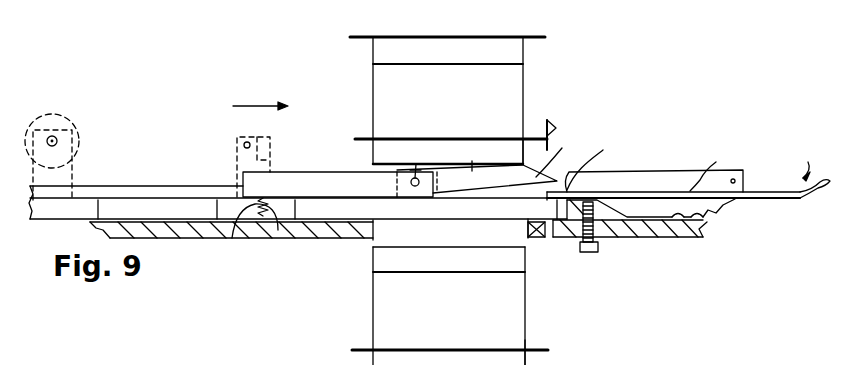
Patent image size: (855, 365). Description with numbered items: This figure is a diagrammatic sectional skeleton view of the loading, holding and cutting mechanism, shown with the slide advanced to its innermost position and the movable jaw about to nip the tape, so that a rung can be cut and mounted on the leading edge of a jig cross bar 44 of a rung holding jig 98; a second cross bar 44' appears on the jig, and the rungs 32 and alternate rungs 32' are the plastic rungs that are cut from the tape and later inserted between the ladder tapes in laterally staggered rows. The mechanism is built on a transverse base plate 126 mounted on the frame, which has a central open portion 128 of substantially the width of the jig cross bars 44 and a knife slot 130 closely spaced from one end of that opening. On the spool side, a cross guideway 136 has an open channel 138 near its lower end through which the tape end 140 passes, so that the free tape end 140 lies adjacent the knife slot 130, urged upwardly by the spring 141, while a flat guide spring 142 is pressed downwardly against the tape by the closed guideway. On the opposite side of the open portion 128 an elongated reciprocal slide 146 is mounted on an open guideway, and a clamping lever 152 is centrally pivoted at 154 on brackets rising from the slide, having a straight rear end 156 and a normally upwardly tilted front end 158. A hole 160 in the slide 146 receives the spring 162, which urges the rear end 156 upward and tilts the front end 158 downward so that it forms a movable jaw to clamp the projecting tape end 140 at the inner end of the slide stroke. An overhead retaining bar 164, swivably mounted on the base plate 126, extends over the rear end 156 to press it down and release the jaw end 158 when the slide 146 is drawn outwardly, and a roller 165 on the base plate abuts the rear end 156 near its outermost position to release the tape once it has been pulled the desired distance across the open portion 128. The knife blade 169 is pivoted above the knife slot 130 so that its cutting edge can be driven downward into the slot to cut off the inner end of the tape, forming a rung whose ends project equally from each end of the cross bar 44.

The ladder rung 32 is at (447, 27).
The alternate ladder rung 32' is at (450, 230).
The jig cross bar 44 is at (469, 160).
The jig cross bar 44' is at (536, 229).
The rung holding jig 98 is at (372, 90).
The transverse base plate 126 is at (172, 238).
The central open portion 128 is at (387, 227).
The knife slot 130 is at (528, 230).
The cross guideway 136 is at (666, 166).
The open channel 138 is at (716, 162).
The tape end 140 is at (646, 174).
The spring 141 is at (598, 251).
The flat guide spring 142 is at (762, 191).
The reciprocal slide 146 is at (320, 218).
The clamping lever 152 is at (468, 158).
The pivot 154 is at (416, 171).
The rear end of clamping lever 156 is at (317, 173).
The front end of clamping lever 158 is at (550, 143).
The hole 160 is at (255, 240).
The spring 162 is at (233, 239).
The overhead retaining bar 164 is at (237, 152).
The roller 165 is at (79, 132).
The knife blade 169 is at (553, 131).